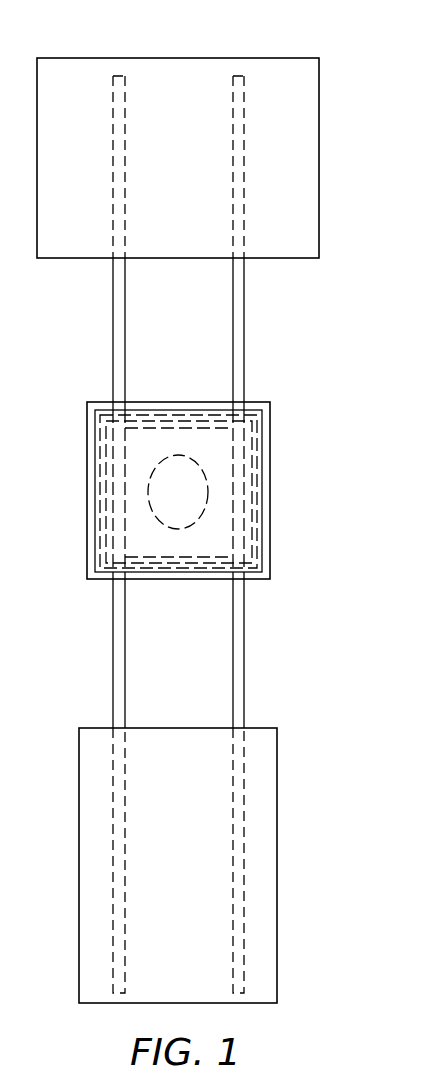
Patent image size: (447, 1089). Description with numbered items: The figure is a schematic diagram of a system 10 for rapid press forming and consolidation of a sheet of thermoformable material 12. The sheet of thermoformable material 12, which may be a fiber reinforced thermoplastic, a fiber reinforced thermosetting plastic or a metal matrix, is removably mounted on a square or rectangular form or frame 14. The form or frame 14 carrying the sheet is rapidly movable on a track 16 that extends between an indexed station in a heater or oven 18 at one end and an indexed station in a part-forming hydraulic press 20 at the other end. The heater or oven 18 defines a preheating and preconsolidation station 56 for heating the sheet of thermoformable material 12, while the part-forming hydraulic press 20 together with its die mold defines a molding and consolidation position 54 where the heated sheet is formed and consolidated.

The system 10 is at (331, 88).
The sheet of thermoformable material 12 is at (213, 527).
The form or frame 14 is at (270, 436).
The track 16 is at (113, 328).
The heater or oven 18 is at (265, 955).
The part-forming hydraulic press 20 is at (302, 220).
The molding and consolidation position 54 is at (333, 163).
The preheating and preconsolidation station 56 is at (286, 829).